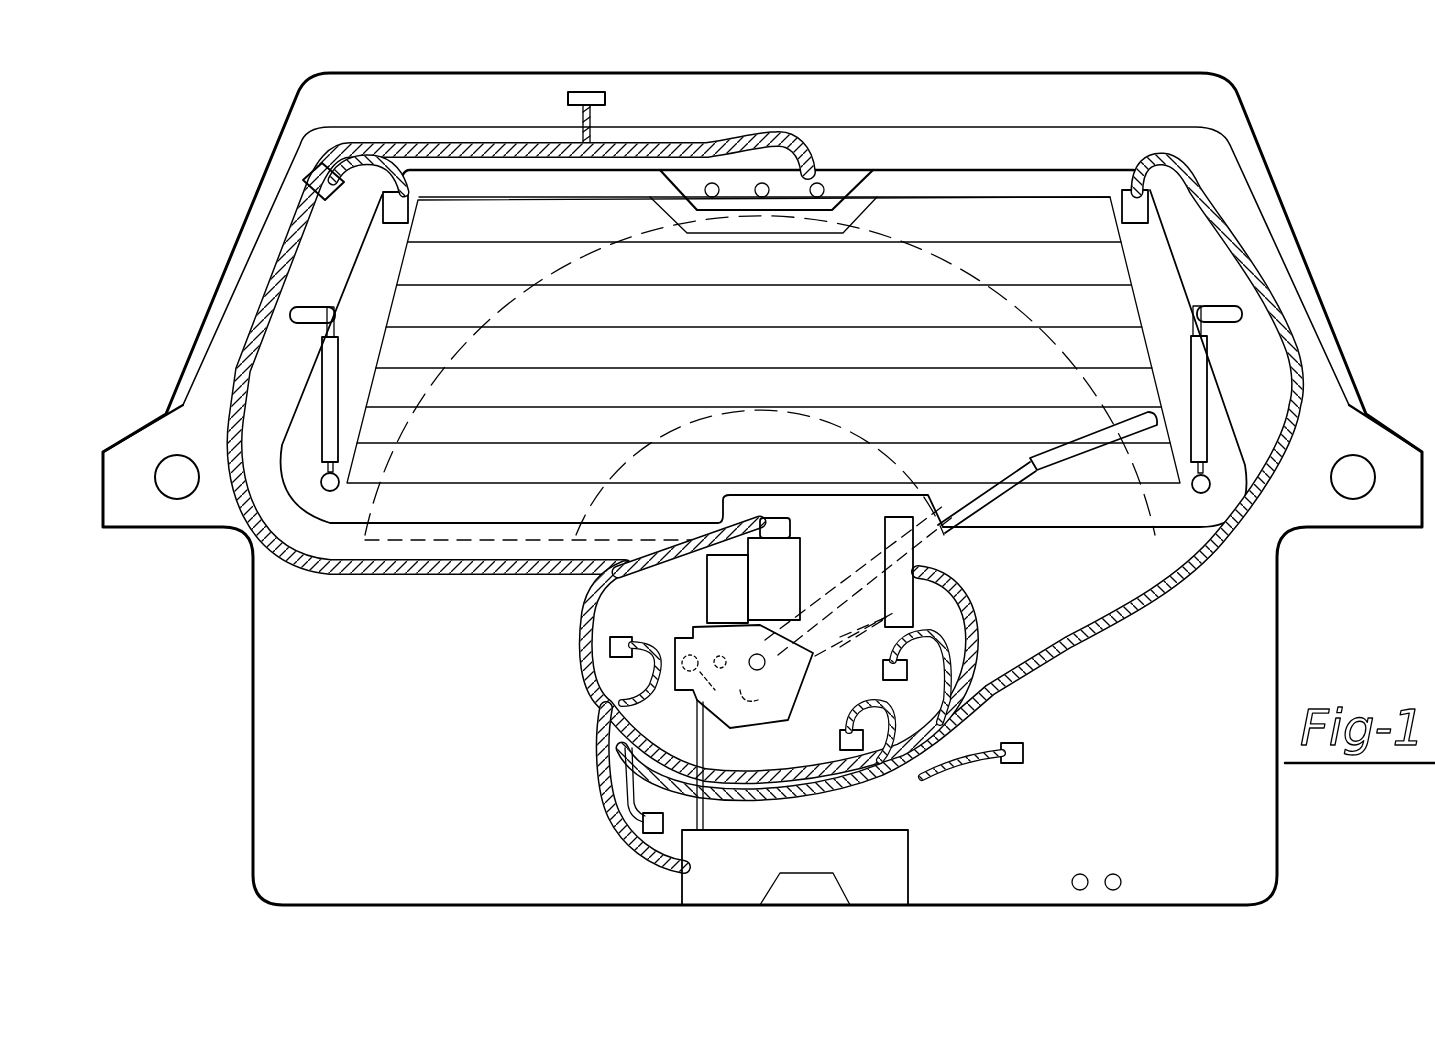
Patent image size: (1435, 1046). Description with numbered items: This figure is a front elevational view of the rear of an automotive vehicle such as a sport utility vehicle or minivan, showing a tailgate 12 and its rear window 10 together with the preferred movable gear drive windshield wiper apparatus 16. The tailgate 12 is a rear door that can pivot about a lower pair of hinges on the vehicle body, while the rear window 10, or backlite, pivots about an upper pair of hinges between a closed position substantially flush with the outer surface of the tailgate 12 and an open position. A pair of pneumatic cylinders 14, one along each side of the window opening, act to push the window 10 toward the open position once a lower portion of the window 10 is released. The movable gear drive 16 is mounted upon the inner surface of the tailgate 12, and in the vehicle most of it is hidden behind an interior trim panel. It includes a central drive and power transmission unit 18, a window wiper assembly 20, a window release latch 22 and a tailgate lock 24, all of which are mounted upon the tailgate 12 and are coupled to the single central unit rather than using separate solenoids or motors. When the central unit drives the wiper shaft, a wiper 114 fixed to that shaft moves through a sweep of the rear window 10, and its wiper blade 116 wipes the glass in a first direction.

The rear window 10 is at (375, 295).
The tailgate 12 is at (367, 796).
The pneumatic cylinders 14 is at (335, 372).
The movable gear drive windshield wiper apparatus 16 is at (652, 714).
The central drive and power transmission unit 18 is at (648, 623).
The window wiper assembly 20 is at (927, 527).
The window release latch 22 is at (907, 610).
The tailgate lock 24 is at (887, 862).
The wiper 114 is at (1003, 478).
The wiper blade 116 is at (1085, 450).